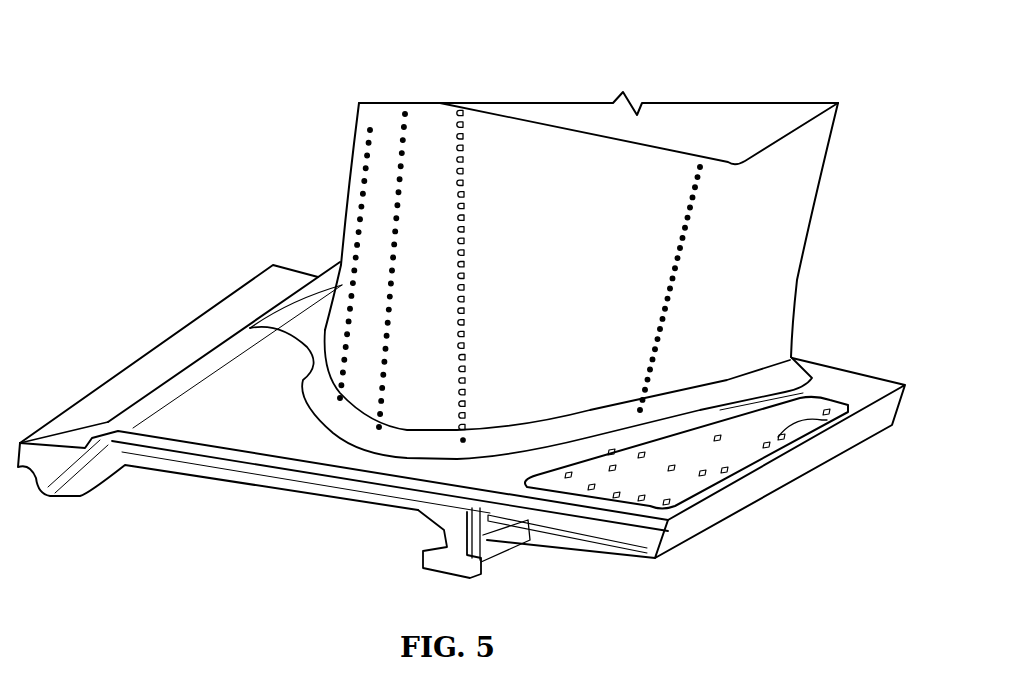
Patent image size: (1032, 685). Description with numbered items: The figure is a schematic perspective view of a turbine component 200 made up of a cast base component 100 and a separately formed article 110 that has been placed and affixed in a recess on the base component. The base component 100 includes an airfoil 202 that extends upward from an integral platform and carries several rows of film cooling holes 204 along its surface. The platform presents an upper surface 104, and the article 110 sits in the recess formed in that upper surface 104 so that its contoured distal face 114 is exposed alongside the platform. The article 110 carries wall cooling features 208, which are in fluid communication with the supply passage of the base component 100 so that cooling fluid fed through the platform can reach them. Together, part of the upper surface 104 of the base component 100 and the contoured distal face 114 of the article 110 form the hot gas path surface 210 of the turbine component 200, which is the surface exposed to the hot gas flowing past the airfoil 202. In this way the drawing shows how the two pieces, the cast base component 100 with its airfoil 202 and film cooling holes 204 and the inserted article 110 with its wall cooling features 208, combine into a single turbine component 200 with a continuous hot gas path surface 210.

The turbine component 200 is at (806, 79).
The base component 100 is at (342, 228).
The airfoil 202 is at (808, 172).
The film cooling holes 204 is at (668, 277).
The upper surface 104 is at (205, 388).
The hot gas path surface 210 is at (590, 463).
The wall cooling features 208 is at (683, 463).
The article 110 is at (660, 472).
The contoured distal face 114 is at (657, 483).